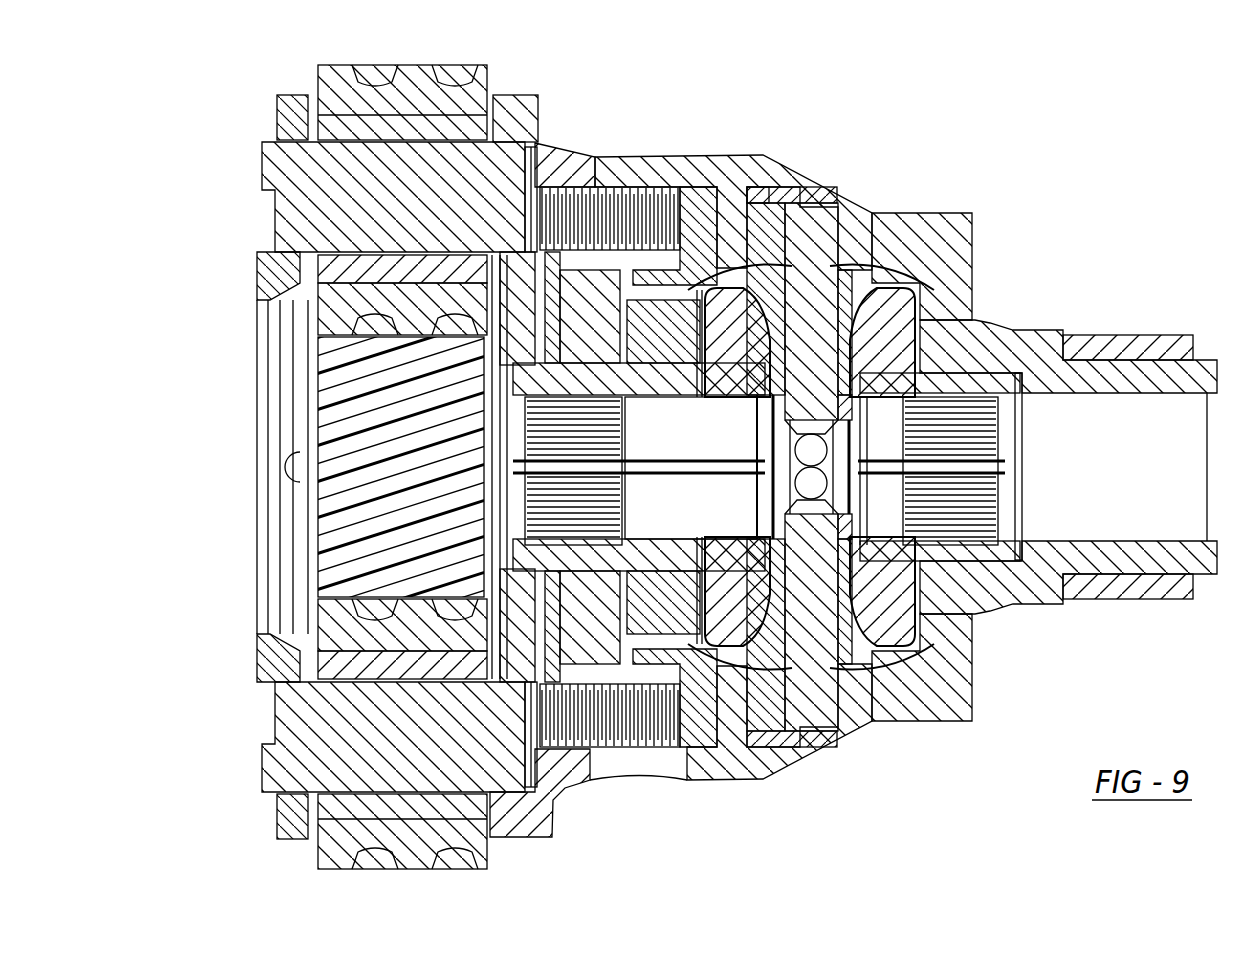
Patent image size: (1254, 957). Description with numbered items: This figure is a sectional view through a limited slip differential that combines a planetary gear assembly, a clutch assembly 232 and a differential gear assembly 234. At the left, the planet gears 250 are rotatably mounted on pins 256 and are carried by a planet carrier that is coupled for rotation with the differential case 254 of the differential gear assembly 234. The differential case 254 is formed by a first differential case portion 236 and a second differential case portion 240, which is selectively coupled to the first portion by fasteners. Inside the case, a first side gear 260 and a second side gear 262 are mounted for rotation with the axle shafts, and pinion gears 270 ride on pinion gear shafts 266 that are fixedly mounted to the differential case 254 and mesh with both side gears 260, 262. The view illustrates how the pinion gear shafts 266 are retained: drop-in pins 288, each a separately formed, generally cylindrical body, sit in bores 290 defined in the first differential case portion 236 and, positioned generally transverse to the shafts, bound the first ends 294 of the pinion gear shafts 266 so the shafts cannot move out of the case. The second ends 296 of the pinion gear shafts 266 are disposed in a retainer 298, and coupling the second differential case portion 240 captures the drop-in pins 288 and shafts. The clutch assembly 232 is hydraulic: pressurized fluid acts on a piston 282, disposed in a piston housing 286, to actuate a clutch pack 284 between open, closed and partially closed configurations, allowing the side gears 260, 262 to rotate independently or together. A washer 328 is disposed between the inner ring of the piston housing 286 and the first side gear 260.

The clutch assembly 232 is at (633, 790).
The differential gear assembly 234 is at (1005, 228).
The first differential case portion 236 is at (725, 167).
The second differential case portion 240 is at (940, 210).
The planet gears 250 is at (332, 84).
The differential case 254 is at (838, 103).
The pins 256 is at (298, 177).
The first side gear 260 is at (733, 605).
The second side gear 262 is at (983, 603).
The pinion gear shafts 266 is at (872, 237).
The pinion gears 270 is at (945, 240).
The piston 282 is at (655, 190).
The clutch pack 284 is at (620, 173).
The piston housing 286 is at (683, 217).
The drop-in pins 288 is at (807, 193).
The bores 290 is at (767, 190).
The first ends 294 is at (838, 230).
The second ends 296 is at (940, 372).
The retainer 298 is at (922, 366).
The washer 328 is at (715, 345).